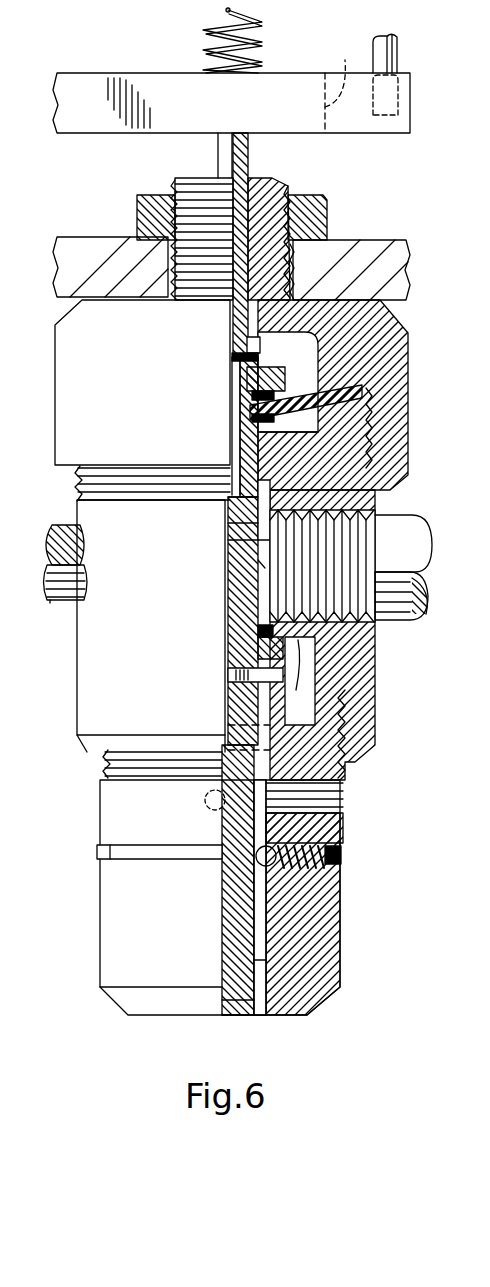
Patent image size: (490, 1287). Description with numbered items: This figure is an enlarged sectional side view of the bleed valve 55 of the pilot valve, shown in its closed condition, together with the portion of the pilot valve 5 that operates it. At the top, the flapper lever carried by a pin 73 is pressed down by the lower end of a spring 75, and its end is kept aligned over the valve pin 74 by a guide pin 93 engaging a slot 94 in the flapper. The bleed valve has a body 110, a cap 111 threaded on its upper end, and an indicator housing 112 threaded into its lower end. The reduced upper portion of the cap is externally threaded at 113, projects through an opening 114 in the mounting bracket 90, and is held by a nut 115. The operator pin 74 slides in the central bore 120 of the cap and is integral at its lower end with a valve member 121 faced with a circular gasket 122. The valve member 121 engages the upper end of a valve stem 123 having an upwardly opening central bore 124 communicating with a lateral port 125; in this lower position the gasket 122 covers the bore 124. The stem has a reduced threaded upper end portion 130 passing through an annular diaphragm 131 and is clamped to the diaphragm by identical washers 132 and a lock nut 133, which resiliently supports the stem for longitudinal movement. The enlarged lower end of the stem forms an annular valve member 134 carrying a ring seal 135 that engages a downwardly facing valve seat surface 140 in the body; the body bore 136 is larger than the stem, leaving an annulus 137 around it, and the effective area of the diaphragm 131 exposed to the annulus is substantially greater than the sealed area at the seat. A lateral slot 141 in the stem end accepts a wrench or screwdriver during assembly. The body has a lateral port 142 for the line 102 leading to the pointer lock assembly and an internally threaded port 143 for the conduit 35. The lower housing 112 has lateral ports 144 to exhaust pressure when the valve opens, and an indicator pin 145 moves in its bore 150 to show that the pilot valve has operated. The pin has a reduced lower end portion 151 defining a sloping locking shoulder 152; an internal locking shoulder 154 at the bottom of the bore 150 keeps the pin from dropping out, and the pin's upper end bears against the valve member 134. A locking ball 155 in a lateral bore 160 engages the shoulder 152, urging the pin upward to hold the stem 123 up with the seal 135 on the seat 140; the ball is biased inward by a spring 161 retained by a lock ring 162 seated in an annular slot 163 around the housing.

The apparatus 5 is at (481, 737).
The conduit 35 is at (416, 522).
The bleed valve 55 is at (396, 706).
The pin 73 is at (160, 80).
The valve pin 74 is at (220, 158).
The spring 75 is at (264, 41).
The mounting bracket 90 is at (84, 255).
The guide pin 93 is at (398, 60).
The slot 94 is at (337, 84).
The line 102 is at (70, 528).
The body 110 is at (377, 664).
The cap 111 is at (398, 370).
The indicator housing 112 is at (336, 942).
The external threads 113 is at (280, 190).
The opening 114 is at (296, 284).
The nut 115 is at (322, 225).
The central bore 120 is at (250, 166).
The valve member 121 is at (232, 336).
The circular gasket 122 is at (232, 355).
The valve stem 123 is at (222, 549).
The central bore 124 is at (236, 457).
The lateral port 125 is at (232, 525).
The threaded upper end portion 130 is at (246, 378).
The annular diaphragm 131 is at (362, 392).
The washers 132 is at (250, 418).
The lock nut 133 is at (268, 374).
The annular valve member 134 is at (256, 657).
The annular ring seal 135 is at (228, 631).
The bore 136 is at (230, 547).
The annulus 137 is at (256, 578).
The valve seat surface 140 is at (295, 681).
The lateral slot 141 is at (228, 679).
The lateral port 142 is at (58, 604).
The internally threaded port 143 is at (408, 618).
The lateral ports 144 is at (212, 802).
The indicator pin 145 is at (220, 886).
The bore 150 is at (255, 955).
The reduced lower end portion 151 is at (236, 1018).
The locking shoulder 152 is at (326, 840).
The internal annular locking shoulder 154 is at (255, 997).
The locking ball 155 is at (302, 874).
The lateral bore 160 is at (276, 860).
The spring 161 is at (342, 856).
The lock ring 162 is at (110, 850).
The annular slot 163 is at (110, 862).